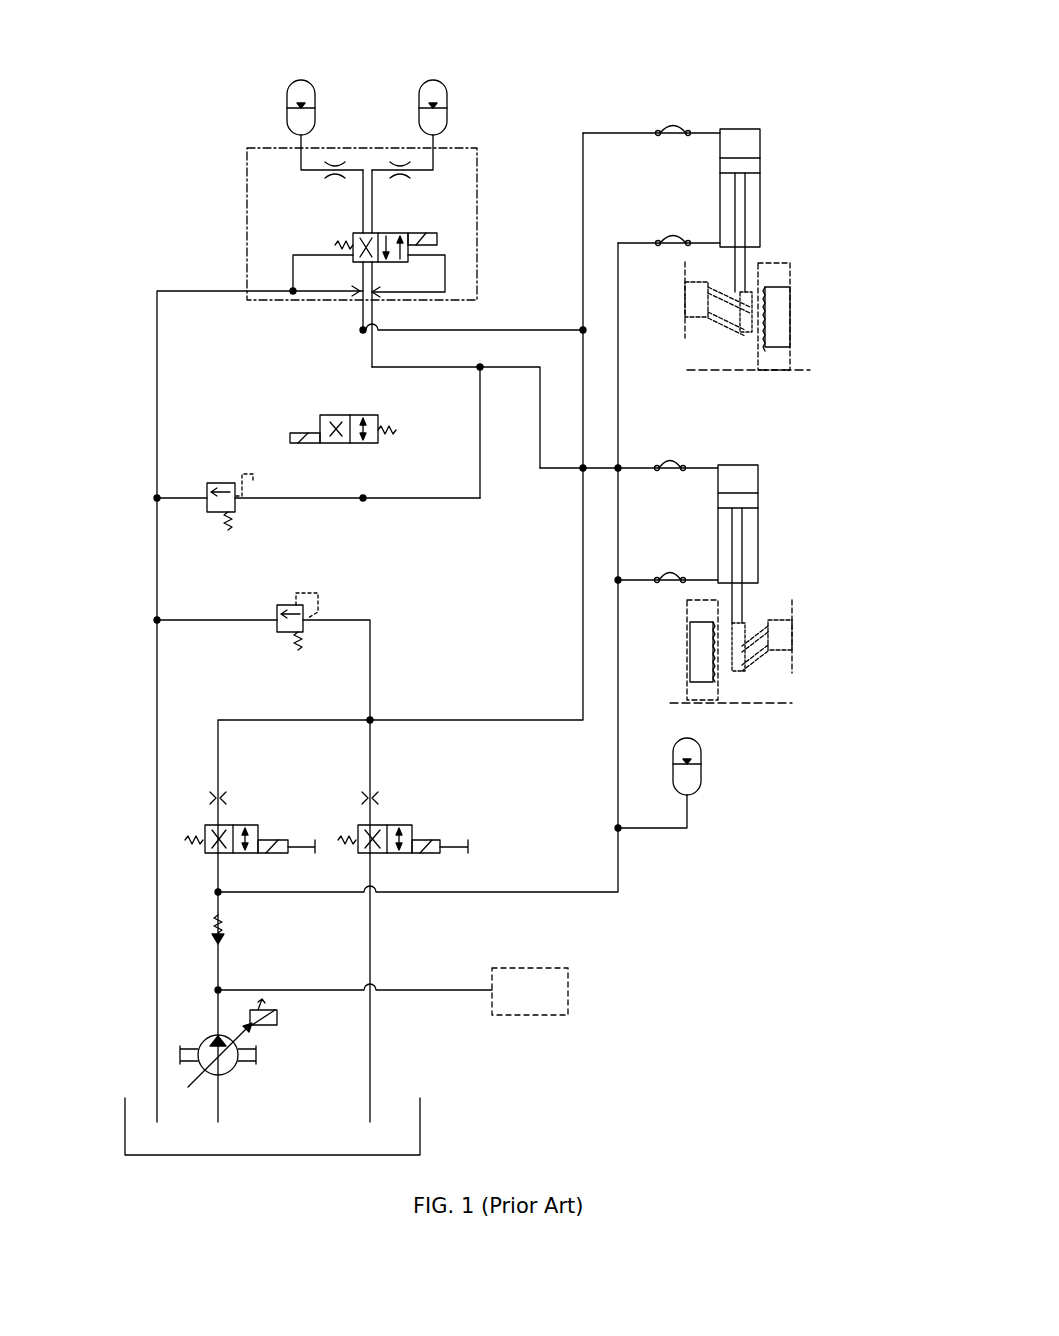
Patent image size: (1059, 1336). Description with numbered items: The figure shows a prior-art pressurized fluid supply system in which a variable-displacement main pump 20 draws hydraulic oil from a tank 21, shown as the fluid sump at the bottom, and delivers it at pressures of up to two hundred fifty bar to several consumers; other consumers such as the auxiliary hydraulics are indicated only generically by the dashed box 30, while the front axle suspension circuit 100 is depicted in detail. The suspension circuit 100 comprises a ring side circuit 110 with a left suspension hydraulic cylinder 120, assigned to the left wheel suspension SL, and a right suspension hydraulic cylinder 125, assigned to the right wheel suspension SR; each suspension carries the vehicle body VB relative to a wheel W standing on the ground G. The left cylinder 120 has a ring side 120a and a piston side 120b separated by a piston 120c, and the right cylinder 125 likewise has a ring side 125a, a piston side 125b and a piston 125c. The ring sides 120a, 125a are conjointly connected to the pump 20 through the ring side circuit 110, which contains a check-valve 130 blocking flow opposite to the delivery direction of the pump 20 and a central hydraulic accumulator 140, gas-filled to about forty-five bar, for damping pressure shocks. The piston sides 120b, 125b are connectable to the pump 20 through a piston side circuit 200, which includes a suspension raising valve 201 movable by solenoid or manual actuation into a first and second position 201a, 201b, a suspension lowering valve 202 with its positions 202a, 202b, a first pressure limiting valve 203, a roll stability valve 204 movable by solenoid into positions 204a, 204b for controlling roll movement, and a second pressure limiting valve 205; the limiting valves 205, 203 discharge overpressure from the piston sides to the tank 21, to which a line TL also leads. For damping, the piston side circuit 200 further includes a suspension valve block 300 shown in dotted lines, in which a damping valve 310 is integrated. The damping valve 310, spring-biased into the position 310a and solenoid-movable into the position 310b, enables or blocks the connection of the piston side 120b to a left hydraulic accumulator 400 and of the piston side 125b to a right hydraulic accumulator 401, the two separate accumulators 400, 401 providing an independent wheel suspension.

The front axle suspension circuit 100 is at (197, 183).
The tank line TL is at (170, 291).
The left hydraulic accumulator 400 is at (292, 118).
The right hydraulic accumulator 401 is at (427, 118).
The suspension valve block 300 is at (478, 208).
The damping valve 310 is at (375, 268).
The first position of damping valve 310a is at (355, 242).
The second position of damping valve 310b is at (400, 243).
The left suspension hydraulic cylinder 120 is at (710, 175).
The ring side 120a is at (724, 218).
The piston side 120b is at (740, 140).
The piston 120c is at (758, 165).
The wheel W is at (778, 275).
The vehicle body VB is at (690, 302).
The left wheel suspension SL is at (740, 330).
The right wheel suspension SR is at (750, 665).
The ground G is at (748, 370).
The roll stability valve 204 is at (361, 416).
The first position of roll stability valve 204a is at (380, 416).
The second position of roll stability valve 204b is at (325, 443).
The second pressure limiting valve 205 is at (220, 483).
The right suspension hydraulic cylinder 125 is at (689, 518).
The ring side 125a is at (722, 558).
The piston side 125b is at (738, 487).
The piston 125c is at (756, 507).
The first pressure limiting valve 203 is at (292, 605).
The piston side circuit 200 is at (242, 720).
The suspension raising valve 201 is at (213, 825).
The first position of suspension raising valve 201a is at (205, 853).
The second position of suspension raising valve 201b is at (255, 828).
The suspension lowering valve 202 is at (403, 816).
The spring of right control valve 202a is at (362, 853).
The solenoid of right control valve 202b is at (408, 828).
The central hydraulic accumulator 140 is at (695, 778).
The ring side circuit 110 is at (620, 860).
The check-valve 130 is at (225, 935).
The auxiliary hydraulics 30 is at (541, 1003).
The main pump 20 is at (235, 1062).
The tank 21 is at (420, 1135).